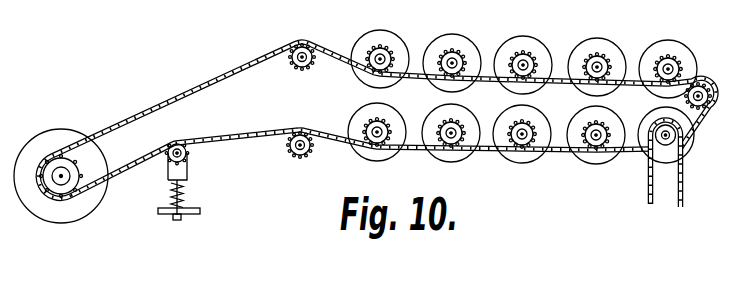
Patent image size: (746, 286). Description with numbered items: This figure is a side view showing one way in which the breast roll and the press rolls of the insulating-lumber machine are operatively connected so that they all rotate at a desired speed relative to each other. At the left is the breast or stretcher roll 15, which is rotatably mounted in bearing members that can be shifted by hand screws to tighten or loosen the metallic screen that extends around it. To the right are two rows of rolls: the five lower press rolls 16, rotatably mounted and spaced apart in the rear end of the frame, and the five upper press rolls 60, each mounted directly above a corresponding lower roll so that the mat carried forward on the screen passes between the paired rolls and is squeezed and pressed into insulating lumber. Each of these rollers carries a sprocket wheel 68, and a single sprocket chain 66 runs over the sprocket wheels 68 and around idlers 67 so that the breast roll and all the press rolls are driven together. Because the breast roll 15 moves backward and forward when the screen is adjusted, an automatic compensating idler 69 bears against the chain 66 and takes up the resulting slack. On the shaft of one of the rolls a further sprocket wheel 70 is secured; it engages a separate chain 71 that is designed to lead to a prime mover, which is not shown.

The breast roll 15 is at (62, 131).
The press rolls 16 is at (399, 124).
The press rolls 60 is at (397, 46).
The chain 66 is at (231, 73).
The idlers 67 is at (306, 45).
The sprocket wheels 68 is at (668, 39).
The automatic compensating idler 69 is at (189, 155).
The sprocket wheel 70 is at (660, 127).
The chain 71 is at (684, 196).